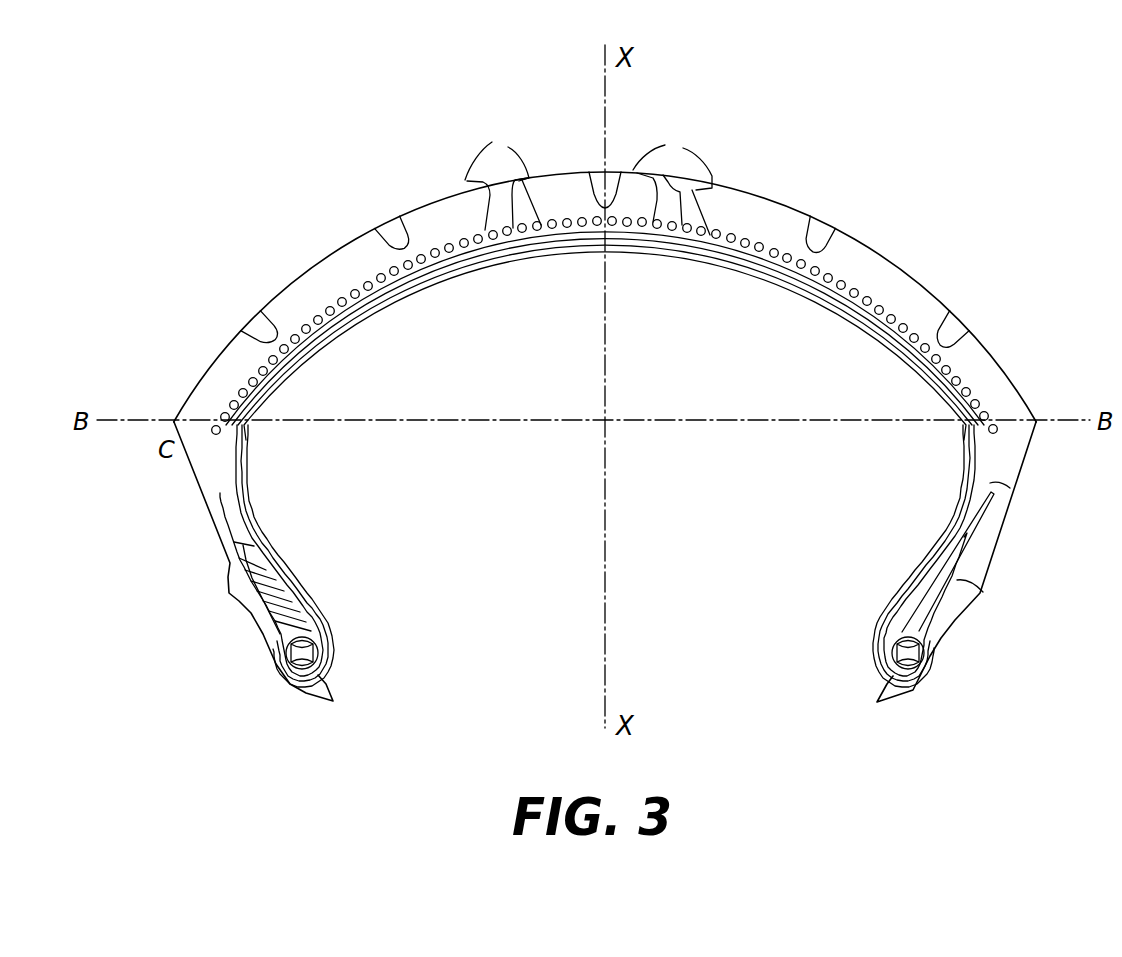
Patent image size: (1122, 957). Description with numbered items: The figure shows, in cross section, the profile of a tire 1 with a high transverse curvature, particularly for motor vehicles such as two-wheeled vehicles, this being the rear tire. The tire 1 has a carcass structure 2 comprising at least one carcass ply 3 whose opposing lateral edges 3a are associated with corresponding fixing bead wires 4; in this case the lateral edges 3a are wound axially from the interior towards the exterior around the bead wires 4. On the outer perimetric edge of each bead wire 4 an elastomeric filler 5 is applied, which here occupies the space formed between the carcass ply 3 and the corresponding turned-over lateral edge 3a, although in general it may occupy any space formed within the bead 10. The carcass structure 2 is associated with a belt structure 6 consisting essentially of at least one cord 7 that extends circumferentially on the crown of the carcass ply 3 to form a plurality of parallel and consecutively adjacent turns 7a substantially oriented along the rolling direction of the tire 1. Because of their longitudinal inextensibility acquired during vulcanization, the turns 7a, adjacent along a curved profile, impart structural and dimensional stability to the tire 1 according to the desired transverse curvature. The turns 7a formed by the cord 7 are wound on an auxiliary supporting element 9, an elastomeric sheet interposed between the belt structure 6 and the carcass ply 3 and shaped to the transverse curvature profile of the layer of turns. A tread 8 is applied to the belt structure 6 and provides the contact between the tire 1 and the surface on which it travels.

The tire 1 is at (776, 120).
The carcass structure 2 is at (1012, 490).
The carcass ply 3 is at (911, 350).
The lateral edges 3a is at (980, 593).
The fixing bead wires 4 is at (320, 656).
The elastomeric filler 5 is at (312, 598).
The belt structure 6 is at (222, 408).
The cord 7 is at (493, 187).
The turns 7a is at (668, 180).
The tread 8 is at (866, 272).
The auxiliary supporting element 9 is at (231, 438).
The bead 10 is at (228, 567).